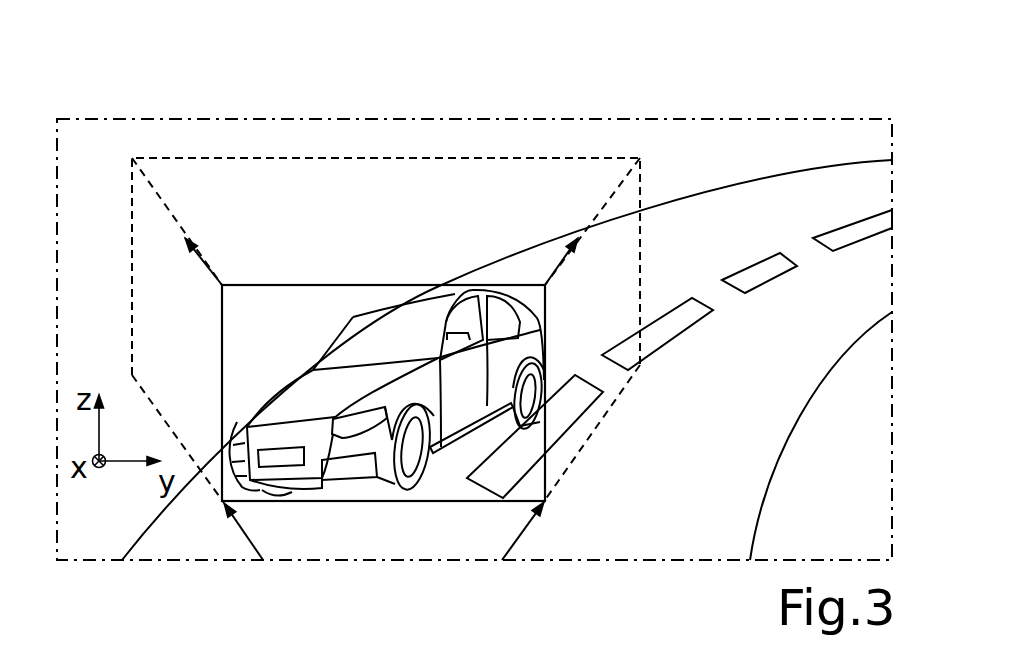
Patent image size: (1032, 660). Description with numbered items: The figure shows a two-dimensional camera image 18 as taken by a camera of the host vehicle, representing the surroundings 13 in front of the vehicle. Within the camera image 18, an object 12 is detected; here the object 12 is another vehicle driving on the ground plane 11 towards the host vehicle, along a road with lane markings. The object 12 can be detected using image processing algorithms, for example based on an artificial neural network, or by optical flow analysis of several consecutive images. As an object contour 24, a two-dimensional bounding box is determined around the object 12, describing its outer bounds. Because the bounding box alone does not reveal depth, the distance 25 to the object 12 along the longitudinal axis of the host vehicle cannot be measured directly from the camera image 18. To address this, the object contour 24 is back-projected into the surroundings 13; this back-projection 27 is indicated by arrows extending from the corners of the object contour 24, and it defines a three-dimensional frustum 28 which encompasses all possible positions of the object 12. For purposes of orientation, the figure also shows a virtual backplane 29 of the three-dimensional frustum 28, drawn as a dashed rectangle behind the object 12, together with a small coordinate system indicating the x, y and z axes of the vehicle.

The ground plane 11 is at (723, 434).
The object 12 is at (373, 318).
The surroundings 13 is at (112, 164).
The 2D camera image 18 is at (474, 280).
The object contour 24 is at (268, 284).
The distance 25 is at (386, 333).
The back-projection 27 is at (205, 268).
The three-dimensional frustum 28 is at (578, 297).
The virtual backplane 29 is at (277, 150).